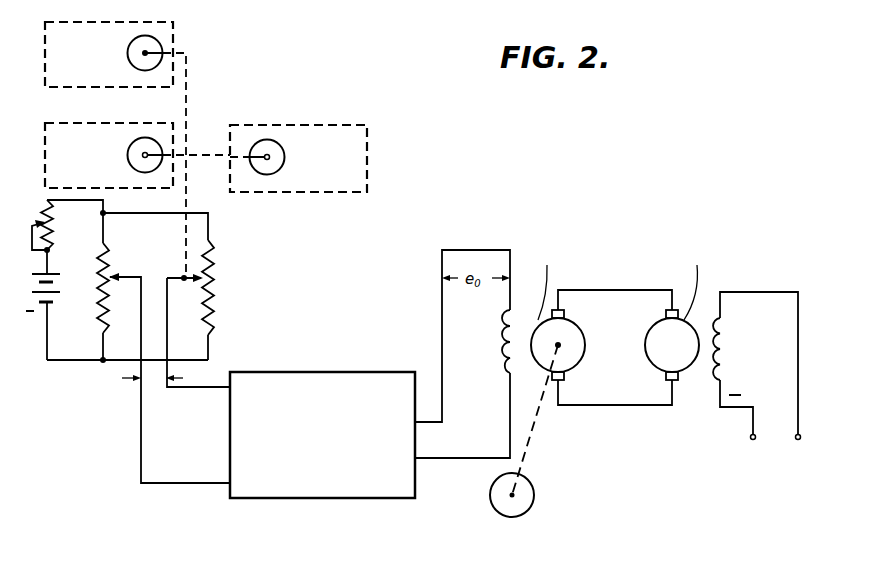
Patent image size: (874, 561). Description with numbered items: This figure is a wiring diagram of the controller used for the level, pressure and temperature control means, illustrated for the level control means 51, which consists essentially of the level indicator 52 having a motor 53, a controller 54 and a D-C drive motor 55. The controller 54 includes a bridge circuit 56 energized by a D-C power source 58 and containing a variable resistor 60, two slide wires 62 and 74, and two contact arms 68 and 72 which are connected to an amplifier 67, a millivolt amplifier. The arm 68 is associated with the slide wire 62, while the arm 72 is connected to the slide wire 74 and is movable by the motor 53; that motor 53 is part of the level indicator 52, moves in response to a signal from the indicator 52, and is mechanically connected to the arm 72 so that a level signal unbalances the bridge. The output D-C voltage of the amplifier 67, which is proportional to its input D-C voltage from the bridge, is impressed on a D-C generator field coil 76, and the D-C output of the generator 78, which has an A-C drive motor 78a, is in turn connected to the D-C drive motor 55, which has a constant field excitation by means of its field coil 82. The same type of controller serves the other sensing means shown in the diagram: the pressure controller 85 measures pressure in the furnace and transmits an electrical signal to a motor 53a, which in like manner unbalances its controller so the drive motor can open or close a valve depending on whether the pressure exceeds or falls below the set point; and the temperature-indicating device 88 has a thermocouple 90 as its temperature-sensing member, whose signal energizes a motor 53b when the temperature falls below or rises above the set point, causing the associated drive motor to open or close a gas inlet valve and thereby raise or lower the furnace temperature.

The level control means 51 is at (382, 89).
The level indicator 52 is at (226, 146).
The motor 53 is at (285, 157).
The motor 53a is at (127, 155).
The motor 53b is at (127, 55).
The controller 54 is at (295, 273).
The D-C drive motor 55 is at (646, 362).
The bridge circuit 56 is at (126, 369).
The D-C power source 58 is at (37, 318).
The variable resistor 60 is at (52, 241).
The slide wire 62 is at (100, 313).
The amplifier 67 is at (313, 500).
The contact arm 68 is at (129, 277).
The contact arm 72 is at (172, 278).
The slide wire 74 is at (217, 292).
The D-C generator field coil 76 is at (502, 345).
The D-C generator 78 is at (582, 338).
The A-C drive motor 78a is at (533, 503).
The field coil 82 is at (727, 352).
The pressure controller 85 is at (180, 127).
The temperature-indicating device 88 is at (178, 27).
The thermocouple 90 is at (251, 167).